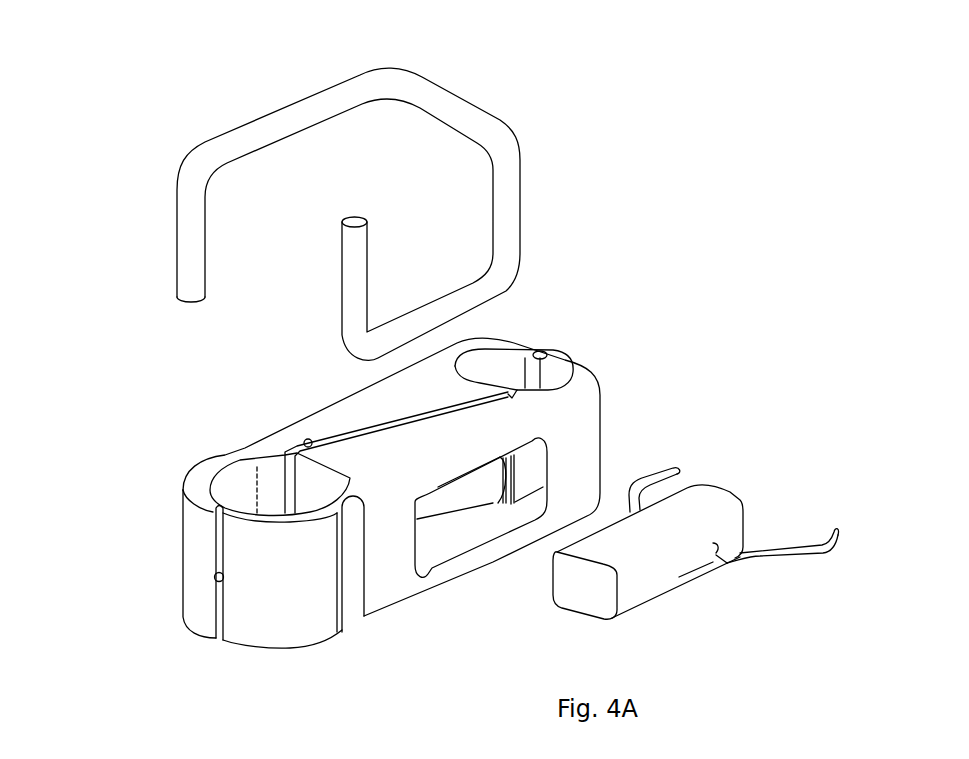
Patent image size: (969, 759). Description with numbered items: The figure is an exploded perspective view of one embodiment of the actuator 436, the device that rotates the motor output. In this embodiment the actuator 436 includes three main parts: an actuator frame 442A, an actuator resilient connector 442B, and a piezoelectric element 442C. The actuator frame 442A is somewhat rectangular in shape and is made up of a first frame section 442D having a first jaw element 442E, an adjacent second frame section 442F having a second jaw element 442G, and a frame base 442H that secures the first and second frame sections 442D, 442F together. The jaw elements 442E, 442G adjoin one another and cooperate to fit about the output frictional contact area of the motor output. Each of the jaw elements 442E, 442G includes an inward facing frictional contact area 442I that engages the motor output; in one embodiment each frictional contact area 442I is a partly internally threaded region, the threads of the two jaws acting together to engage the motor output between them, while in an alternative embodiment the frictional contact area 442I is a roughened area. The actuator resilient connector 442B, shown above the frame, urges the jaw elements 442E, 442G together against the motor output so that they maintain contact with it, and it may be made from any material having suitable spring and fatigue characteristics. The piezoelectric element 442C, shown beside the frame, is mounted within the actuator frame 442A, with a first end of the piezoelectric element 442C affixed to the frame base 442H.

The actuator 436 is at (578, 218).
The actuator frame 442A is at (495, 338).
The actuator resilient connector 442B is at (290, 117).
The piezoelectric element 442C is at (685, 507).
The first frame section 442D is at (428, 585).
The first jaw element 442E is at (268, 630).
The second frame section 442F is at (300, 418).
The second jaw element 442G is at (207, 470).
The frame base 442H is at (572, 358).
The frictional contact area 442I is at (252, 470).